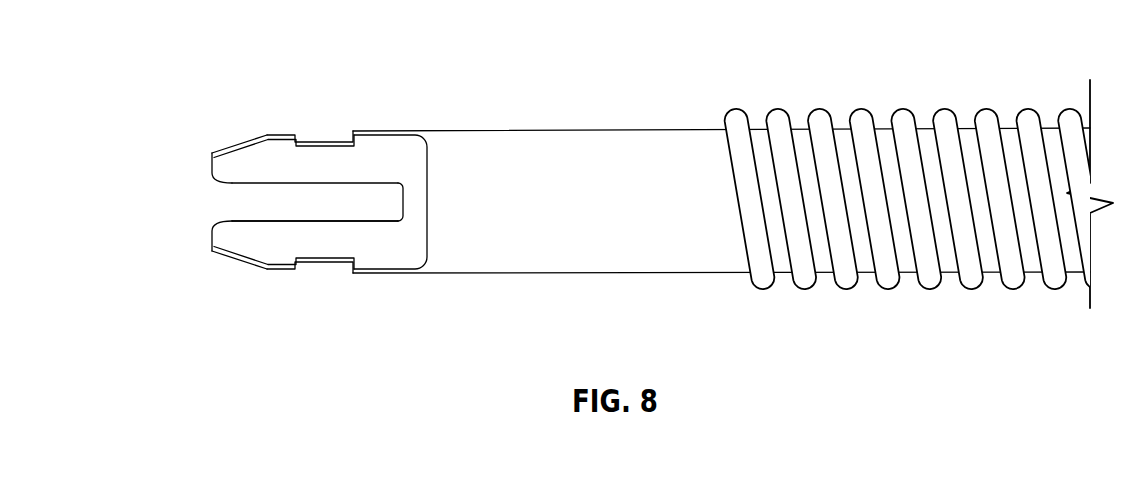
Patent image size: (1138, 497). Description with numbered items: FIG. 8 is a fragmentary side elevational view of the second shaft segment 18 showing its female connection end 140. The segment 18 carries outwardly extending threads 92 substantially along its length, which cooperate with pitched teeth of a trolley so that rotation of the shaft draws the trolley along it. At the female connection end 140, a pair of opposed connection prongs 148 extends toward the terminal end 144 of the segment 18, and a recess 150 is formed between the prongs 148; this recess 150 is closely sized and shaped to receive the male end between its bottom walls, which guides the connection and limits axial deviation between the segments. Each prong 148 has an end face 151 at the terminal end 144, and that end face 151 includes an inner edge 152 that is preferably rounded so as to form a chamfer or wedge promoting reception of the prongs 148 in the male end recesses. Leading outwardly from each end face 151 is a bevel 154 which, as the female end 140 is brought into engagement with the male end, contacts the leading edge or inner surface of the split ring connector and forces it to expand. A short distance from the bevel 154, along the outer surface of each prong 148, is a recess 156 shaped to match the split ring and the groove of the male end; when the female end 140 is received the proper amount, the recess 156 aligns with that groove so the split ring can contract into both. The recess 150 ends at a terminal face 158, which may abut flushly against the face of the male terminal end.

The second shaft segment 18 is at (645, 100).
The threads 92 is at (947, 112).
The female connection end 140 is at (286, 222).
The terminal end 144 is at (222, 208).
The connection prongs 148 is at (390, 150).
The recess 150 is at (194, 214).
The end face 151 is at (208, 165).
The inner edge 152 is at (213, 172).
The bevel 154 is at (236, 145).
The recess 156 is at (328, 114).
The terminal face 158 is at (405, 199).